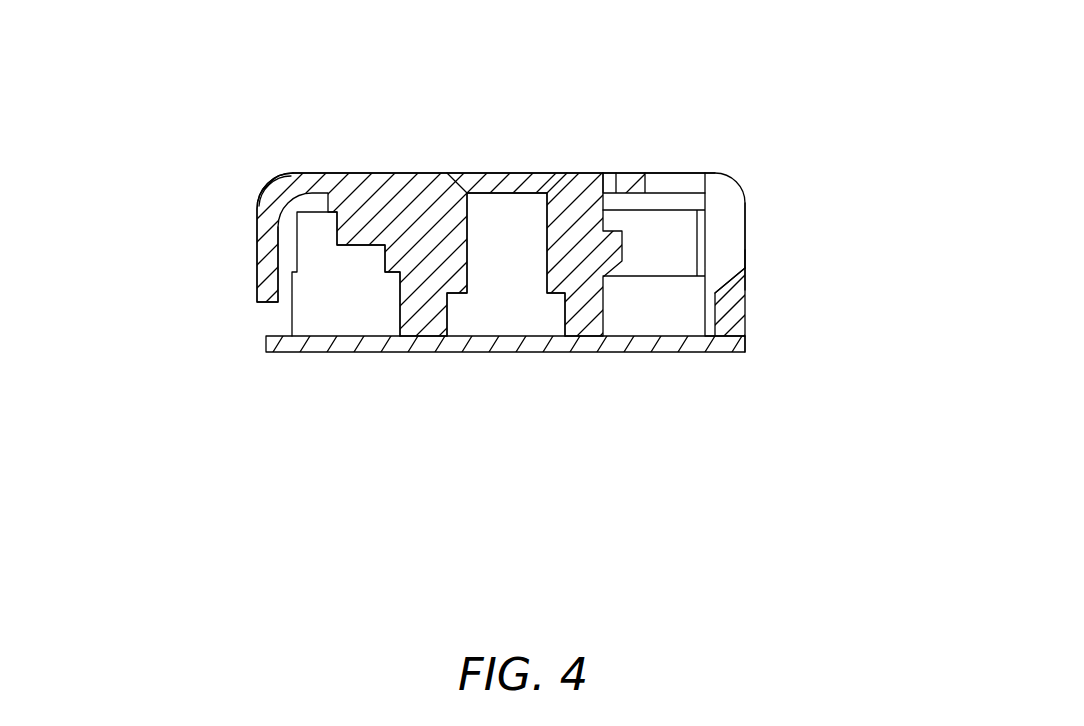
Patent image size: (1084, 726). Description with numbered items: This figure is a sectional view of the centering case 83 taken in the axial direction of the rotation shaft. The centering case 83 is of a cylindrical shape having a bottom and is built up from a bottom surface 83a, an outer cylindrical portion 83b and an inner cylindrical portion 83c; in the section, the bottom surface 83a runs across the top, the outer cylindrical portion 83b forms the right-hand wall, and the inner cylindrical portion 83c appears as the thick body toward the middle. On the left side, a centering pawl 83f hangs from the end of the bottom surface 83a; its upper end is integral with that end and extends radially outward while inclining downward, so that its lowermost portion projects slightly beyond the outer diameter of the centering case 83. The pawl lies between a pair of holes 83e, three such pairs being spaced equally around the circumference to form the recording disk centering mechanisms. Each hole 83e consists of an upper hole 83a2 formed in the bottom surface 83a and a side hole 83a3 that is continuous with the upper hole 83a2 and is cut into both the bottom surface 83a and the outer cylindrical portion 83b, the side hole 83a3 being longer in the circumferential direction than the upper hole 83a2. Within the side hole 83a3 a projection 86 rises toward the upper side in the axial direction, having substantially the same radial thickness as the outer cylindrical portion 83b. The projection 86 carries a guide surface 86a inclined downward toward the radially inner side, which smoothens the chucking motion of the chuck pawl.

The centering case 83 is at (240, 380).
The bottom surface 83a is at (385, 173).
The upper hole 83a2 is at (667, 183).
The side hole 83a3 is at (725, 226).
The outer cylindrical portion 83b is at (780, 257).
The inner cylindrical portion 83c is at (440, 257).
The hole 83e is at (762, 283).
The centering pawl 83f is at (257, 253).
The projection 86 is at (732, 317).
The guide surface 86a is at (714, 291).